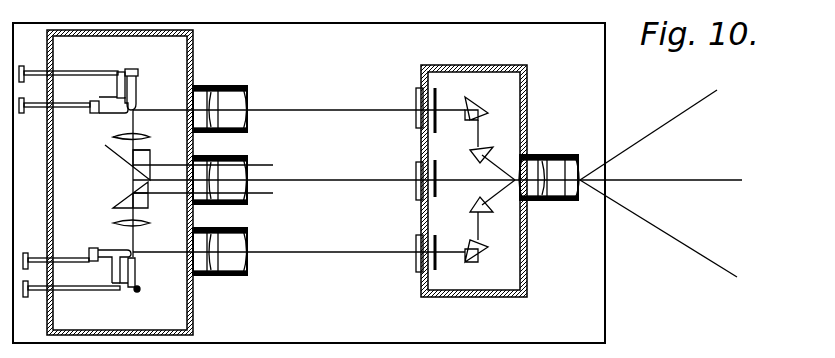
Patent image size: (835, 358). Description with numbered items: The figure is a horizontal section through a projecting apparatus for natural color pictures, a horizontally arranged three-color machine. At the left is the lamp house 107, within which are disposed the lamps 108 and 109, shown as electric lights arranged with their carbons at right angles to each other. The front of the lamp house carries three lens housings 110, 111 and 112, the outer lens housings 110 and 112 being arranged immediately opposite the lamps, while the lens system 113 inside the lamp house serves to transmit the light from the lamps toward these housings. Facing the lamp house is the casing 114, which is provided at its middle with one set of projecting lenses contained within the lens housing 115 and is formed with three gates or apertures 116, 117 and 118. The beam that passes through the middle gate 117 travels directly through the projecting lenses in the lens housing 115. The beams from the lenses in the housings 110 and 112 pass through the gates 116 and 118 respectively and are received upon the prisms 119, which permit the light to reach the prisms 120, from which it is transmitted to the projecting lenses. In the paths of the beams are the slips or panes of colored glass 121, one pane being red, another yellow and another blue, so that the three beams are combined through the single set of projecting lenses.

The lamp house 107 is at (129, 74).
The lamp 108 is at (137, 104).
The lamp 109 is at (123, 281).
The lens housing 110 is at (207, 87).
The lens housing 111 is at (248, 172).
The lens housing 112 is at (249, 245).
The lens system 113 is at (113, 151).
The casing 114 is at (526, 104).
The lens housing 115 is at (546, 156).
The gate 116 is at (418, 108).
The gate 117 is at (418, 174).
The gate 118 is at (418, 248).
The prism 119 is at (483, 112).
The prism 120 is at (493, 147).
The pane of colored glass 121 is at (437, 106).